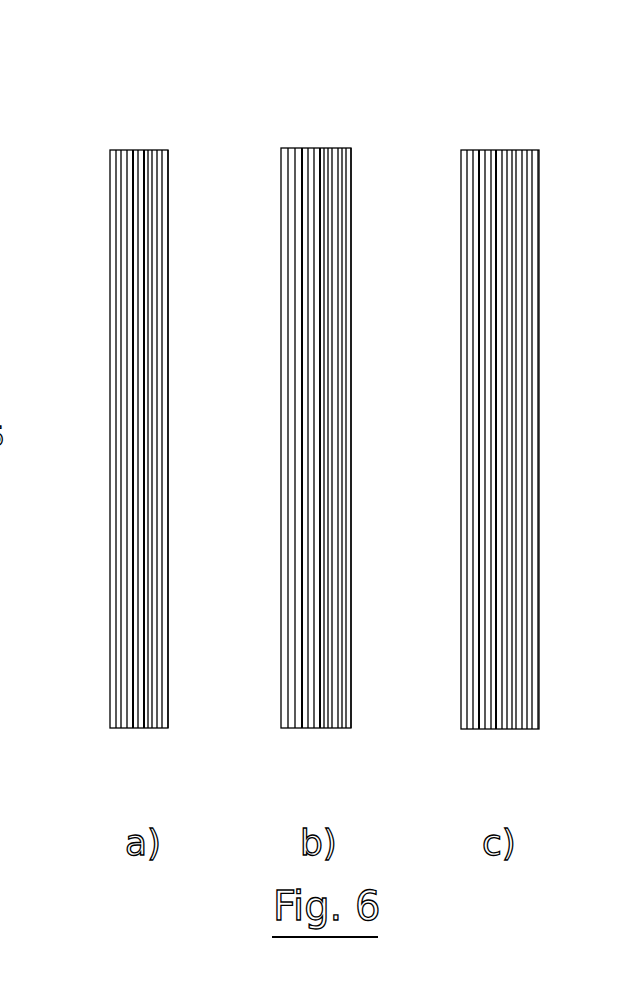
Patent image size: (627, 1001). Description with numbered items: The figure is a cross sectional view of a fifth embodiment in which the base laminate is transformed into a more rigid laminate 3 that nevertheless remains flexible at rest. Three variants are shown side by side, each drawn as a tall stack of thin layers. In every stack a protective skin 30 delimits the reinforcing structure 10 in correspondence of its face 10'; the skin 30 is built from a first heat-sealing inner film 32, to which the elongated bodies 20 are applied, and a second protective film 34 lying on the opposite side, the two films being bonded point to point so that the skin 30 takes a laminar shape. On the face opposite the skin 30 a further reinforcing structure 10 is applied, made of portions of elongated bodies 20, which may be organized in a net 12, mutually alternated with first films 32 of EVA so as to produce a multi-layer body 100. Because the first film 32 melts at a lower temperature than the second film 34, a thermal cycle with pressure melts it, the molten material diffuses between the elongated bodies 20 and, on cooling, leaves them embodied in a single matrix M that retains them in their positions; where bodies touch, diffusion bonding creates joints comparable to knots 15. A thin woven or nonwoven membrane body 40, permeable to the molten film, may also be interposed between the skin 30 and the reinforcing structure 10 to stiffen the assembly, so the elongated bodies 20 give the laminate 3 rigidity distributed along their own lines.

The rigid laminate 3 is at (302, 400).
The multi-layer body 100 is at (110, 178).
The reinforcing structure 10 is at (317, 438).
The face of the reinforcing structure 10' is at (259, 438).
The net 12 is at (160, 652).
The knots 15 is at (152, 492).
The elongated bodies 20 is at (137, 602).
The protective skin 30 is at (110, 335).
The first heat-sealing inner film 32 is at (168, 166).
The second protective film 34 is at (115, 692).
The membrane body 40 is at (128, 728).
The matrix M is at (170, 678).